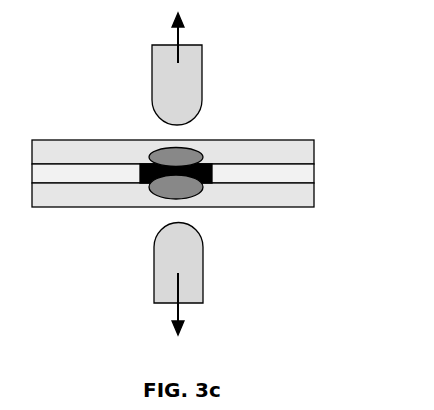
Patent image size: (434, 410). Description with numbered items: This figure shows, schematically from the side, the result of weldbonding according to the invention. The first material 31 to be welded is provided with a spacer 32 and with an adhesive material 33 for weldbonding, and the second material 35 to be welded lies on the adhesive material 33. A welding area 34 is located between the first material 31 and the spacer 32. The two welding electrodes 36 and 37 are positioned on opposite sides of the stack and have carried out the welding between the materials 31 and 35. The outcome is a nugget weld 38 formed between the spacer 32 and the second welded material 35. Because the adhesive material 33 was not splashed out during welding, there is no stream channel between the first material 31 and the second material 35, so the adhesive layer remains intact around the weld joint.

The first material 31 is at (108, 197).
The spacer 32 is at (205, 185).
The adhesive material 33 is at (50, 173).
The welding area 34 is at (162, 193).
The second material 35 is at (70, 155).
The welding electrode 36 is at (202, 60).
The welding electrode 37 is at (203, 277).
The nugget weld 38 is at (187, 163).